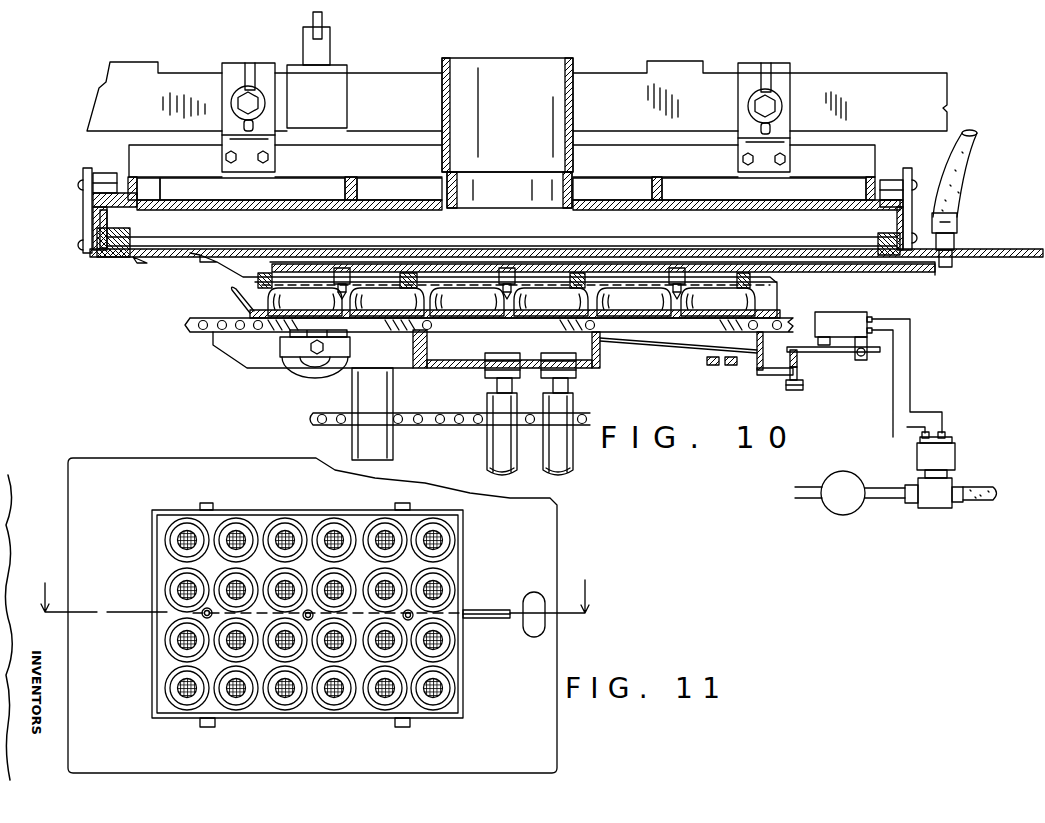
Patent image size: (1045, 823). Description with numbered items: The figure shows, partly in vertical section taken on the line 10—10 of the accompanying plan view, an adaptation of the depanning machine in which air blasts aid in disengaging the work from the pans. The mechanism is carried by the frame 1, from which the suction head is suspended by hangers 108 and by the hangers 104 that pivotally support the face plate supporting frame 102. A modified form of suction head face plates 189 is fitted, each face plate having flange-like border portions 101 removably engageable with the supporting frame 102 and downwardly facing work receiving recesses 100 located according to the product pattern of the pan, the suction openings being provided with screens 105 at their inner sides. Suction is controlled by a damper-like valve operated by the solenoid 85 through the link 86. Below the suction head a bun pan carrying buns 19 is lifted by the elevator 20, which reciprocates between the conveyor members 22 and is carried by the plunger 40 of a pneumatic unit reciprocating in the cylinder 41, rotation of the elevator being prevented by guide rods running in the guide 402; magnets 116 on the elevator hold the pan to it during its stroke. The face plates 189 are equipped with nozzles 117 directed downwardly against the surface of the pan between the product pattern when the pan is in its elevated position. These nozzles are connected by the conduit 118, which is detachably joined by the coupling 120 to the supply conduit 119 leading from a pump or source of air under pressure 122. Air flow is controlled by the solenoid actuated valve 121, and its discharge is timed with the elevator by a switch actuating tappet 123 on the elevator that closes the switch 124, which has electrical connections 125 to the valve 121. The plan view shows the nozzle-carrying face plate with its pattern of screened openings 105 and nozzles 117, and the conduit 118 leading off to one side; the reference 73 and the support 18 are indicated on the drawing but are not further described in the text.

In FIG. 10, the frame 1 is at (105, 76).
In FIG. 10, the hangers 108 is at (236, 68).
In FIG. 10, the solenoid 85 is at (337, 102).
In FIG. 10, the link 86 is at (331, 16).
In FIG. 10, the frame plate 73 is at (377, 217).
In FIG. 10, the work receiving recesses 100 is at (597, 270).
In FIG. 10, the hangers 104 is at (83, 172).
In FIG. 10, the face plate supporting frame 102 is at (103, 262).
In FIG. 10, the supply conduit 119 is at (967, 160).
In FIG. 10, the coupling 120 is at (957, 223).
In FIG. 10, the suction head face plates 189 is at (847, 260).
In FIG. 11, the suction head face plates 189 is at (67, 473).
In FIG. 10, the flange-like border portions 101 is at (190, 253).
In FIG. 11, the flange-like border portions 101 is at (147, 485).
In FIG. 10, the screens 105 is at (511, 302).
In FIG. 11, the screens 105 is at (187, 583).
In FIG. 10, the nozzles 117 is at (344, 300).
In FIG. 11, the nozzles 117 is at (300, 618).
In FIG. 10, the conveyor members 22 is at (197, 320).
In FIG. 10, the buns 19 is at (257, 322).
In FIG. 10, the magnets 116 is at (315, 362).
In FIG. 10, the elevator 20 is at (588, 370).
In FIG. 10, the plunger 40 is at (497, 382).
In FIG. 10, the cylinder 41 is at (493, 425).
In FIG. 10, the guide 402 is at (566, 455).
In FIG. 10, the support bracket 18 is at (723, 312).
In FIG. 10, the switch actuating tappet 123 is at (800, 360).
In FIG. 10, the switch 124 is at (838, 328).
In FIG. 10, the electrical connections 125 is at (912, 388).
In FIG. 10, the solenoid actuated valve 121 is at (955, 457).
In FIG. 10, the pump 122 is at (832, 503).
In FIG. 11, the conduit 118 is at (480, 620).
In FIG. 11, the section line 10 is at (319, 599).